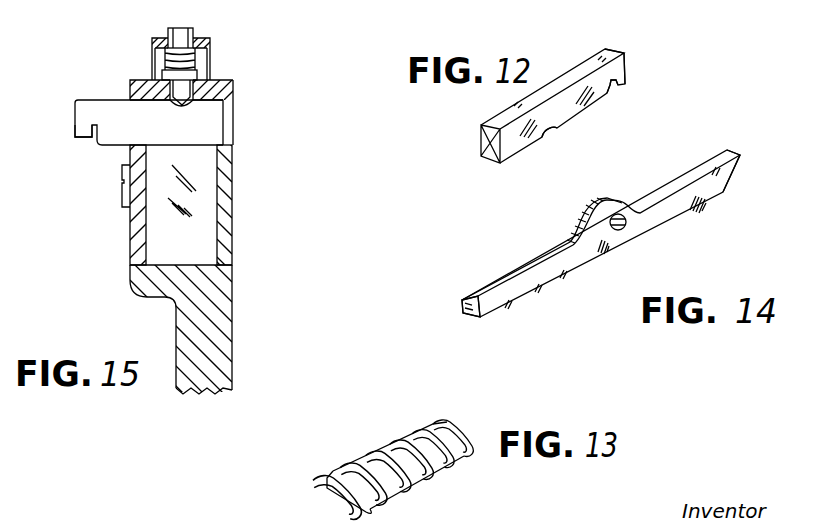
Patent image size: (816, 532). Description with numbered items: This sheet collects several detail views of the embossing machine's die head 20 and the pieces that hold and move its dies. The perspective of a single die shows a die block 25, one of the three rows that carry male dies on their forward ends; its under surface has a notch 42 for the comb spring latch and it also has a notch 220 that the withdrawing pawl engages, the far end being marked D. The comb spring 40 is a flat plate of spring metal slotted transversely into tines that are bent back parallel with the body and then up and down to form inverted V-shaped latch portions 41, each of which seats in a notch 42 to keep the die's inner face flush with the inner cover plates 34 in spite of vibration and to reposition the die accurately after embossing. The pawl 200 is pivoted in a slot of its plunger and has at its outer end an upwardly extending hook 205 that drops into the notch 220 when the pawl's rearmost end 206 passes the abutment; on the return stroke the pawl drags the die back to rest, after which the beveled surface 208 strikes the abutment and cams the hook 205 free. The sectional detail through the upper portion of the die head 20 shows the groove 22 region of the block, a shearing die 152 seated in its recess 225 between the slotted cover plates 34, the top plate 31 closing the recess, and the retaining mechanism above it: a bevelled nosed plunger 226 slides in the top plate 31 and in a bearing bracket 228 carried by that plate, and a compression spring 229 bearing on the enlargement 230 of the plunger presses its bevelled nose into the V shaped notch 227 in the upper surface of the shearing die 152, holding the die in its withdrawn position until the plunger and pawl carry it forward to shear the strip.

In FIG. 15, the die head 20 is at (213, 321).
In FIG. 15, the groove 22 is at (216, 24).
In FIG. 12, the die block 25 is at (583, 67).
In FIG. 15, the top plate 31 is at (138, 80).
In FIG. 15, the cover plate 34 is at (133, 235).
In FIG. 13, the comb spring 40 is at (326, 489).
In FIG. 13, the latch portion 41 is at (420, 430).
In FIG. 12, the notch 42 is at (548, 132).
In FIG. 15, the shearing die 152 is at (149, 122).
In FIG. 14, the pawl 200 is at (641, 221).
In FIG. 14, the hook 205 is at (468, 297).
In FIG. 14, the rearmost end 206 is at (698, 201).
In FIG. 14, the beveled surface 208 is at (730, 178).
In FIG. 15, the notch 220 is at (92, 133).
In FIG. 12, the notch 220 is at (619, 93).
In FIG. 15, the recess 225 is at (229, 117).
In FIG. 15, the bevelled nosed plunger 226 is at (192, 83).
In FIG. 15, the V shaped notch 227 is at (188, 99).
In FIG. 15, the bearing bracket 228 is at (202, 57).
In FIG. 15, the compression spring 229 is at (198, 64).
In FIG. 15, the enlargement 230 is at (197, 73).
In FIG. 12, the bar end D is at (622, 63).